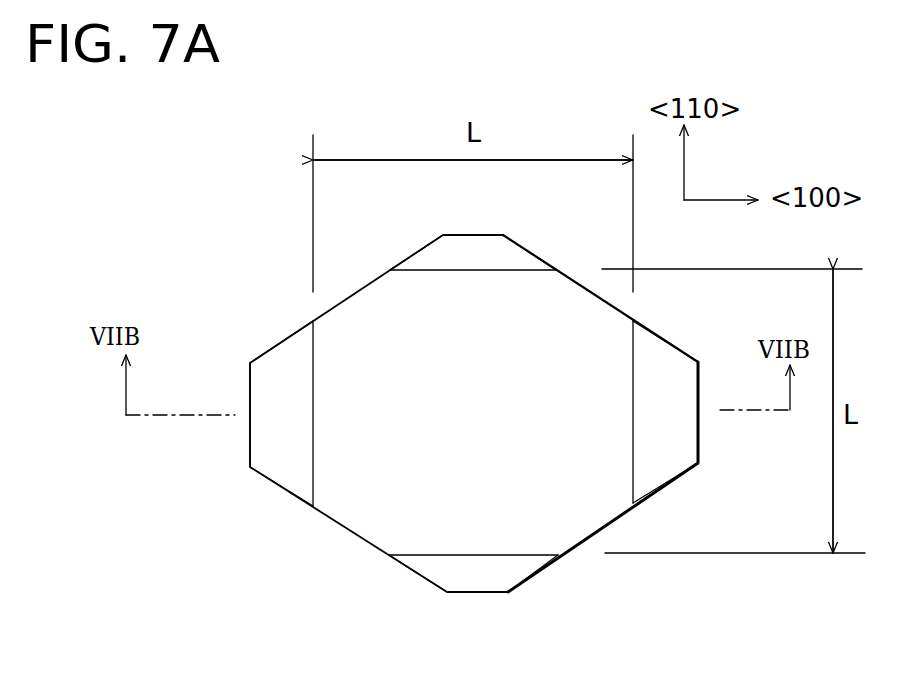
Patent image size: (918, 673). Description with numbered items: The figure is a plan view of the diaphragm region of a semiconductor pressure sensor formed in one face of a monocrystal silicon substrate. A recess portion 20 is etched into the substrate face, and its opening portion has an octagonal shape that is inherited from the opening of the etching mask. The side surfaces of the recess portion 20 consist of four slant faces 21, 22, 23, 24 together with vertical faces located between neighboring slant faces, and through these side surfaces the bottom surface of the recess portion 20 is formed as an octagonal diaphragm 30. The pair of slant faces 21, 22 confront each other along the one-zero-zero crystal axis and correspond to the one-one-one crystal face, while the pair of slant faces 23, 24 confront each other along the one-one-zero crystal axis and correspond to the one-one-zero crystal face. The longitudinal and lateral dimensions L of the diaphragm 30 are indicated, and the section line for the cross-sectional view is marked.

The recess portion 20 is at (347, 532).
The slant face 21 is at (270, 387).
The slant face 22 is at (668, 350).
The slant face 23 is at (468, 255).
The slant face 24 is at (470, 578).
The diaphragm 30 is at (410, 452).